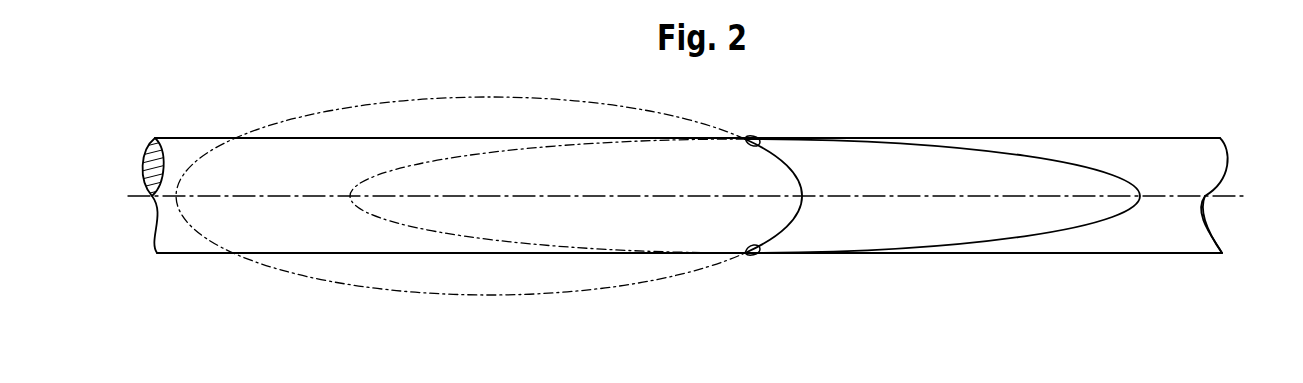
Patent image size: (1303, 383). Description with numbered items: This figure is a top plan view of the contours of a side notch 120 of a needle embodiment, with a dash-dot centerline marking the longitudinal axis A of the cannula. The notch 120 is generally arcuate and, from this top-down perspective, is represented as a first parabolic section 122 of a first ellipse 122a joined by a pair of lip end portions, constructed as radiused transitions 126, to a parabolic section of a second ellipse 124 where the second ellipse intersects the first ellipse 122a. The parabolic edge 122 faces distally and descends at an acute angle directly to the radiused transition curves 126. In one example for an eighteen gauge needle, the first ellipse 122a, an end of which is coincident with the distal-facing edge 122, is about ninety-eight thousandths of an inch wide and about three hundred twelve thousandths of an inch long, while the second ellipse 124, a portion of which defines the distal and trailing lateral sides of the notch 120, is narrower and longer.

The side notch 120 is at (1093, 161).
The first parabolic section 122 is at (812, 210).
The first ellipse 122a is at (568, 292).
The second ellipse 124 is at (482, 152).
The radiused transitions 126 is at (744, 138).
The longitudinal axis A is at (1243, 197).